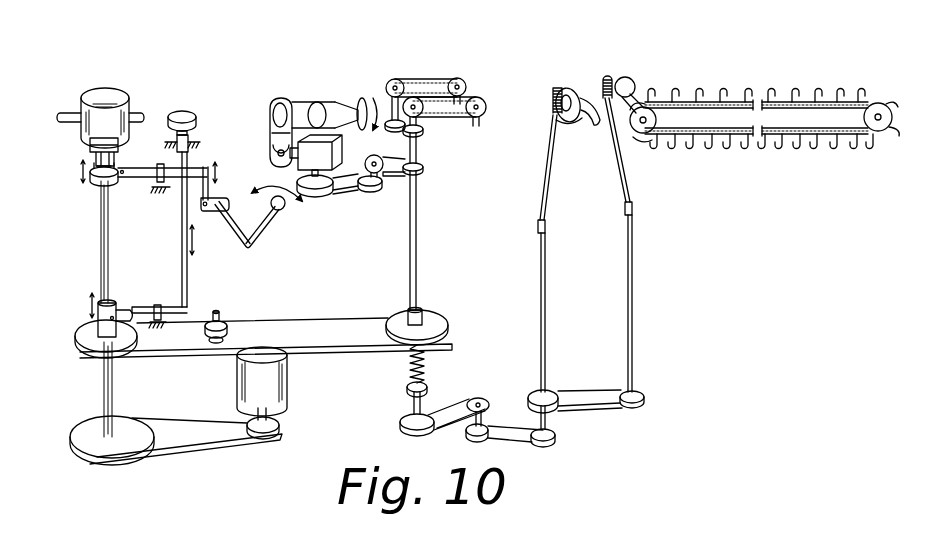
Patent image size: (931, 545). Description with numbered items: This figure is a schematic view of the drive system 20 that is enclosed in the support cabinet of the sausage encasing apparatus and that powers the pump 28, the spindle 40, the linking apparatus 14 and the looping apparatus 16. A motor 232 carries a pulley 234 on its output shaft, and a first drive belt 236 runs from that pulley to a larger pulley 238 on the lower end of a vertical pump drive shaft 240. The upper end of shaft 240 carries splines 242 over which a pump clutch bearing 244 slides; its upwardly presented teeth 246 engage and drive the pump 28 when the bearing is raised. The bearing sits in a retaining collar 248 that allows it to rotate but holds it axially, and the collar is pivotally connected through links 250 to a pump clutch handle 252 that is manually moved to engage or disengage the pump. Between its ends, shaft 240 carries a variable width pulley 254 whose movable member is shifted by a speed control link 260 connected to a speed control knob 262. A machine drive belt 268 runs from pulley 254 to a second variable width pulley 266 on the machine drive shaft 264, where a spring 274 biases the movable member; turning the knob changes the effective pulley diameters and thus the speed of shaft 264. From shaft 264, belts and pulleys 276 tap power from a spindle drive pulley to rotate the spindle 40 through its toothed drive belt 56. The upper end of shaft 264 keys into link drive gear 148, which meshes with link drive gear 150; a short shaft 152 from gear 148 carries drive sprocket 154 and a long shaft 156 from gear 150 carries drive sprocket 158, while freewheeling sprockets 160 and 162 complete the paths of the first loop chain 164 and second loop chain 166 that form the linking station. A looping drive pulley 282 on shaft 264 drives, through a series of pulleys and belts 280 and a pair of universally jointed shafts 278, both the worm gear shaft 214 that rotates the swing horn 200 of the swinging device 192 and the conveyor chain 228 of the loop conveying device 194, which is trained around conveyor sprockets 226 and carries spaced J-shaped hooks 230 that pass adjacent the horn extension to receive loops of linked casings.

The linking apparatus 14 is at (422, 76).
The looping apparatus 16 is at (764, 111).
The drive system 20 is at (352, 44).
The pump 28 is at (96, 90).
The spindle 40 is at (297, 90).
The drive belt 56 is at (270, 143).
The link drive gear 148 is at (425, 133).
The link drive gear 150 is at (391, 132).
The short shaft 152 is at (422, 118).
The sprocket or drive wheel 154 is at (418, 100).
The long shaft 156 is at (393, 118).
The sprocket or drive wheel 158 is at (397, 79).
The freewheeling sprocket 160 is at (486, 111).
The free-wheeling sprocket 162 is at (467, 86).
The first loop chain 164 is at (466, 100).
The second loop chain 166 is at (446, 80).
The swinging device 192 is at (568, 130).
The loop conveying device 194 is at (758, 96).
The swing horn 200 is at (576, 88).
The worm gear shaft 214 is at (547, 204).
The conveyor sprockets 226 is at (652, 128).
The conveyor chain 228 is at (692, 100).
The J-shaped hooks 230 is at (800, 142).
The motor 232 is at (287, 388).
The pulley 234 is at (280, 432).
The first drive belt 236 is at (190, 450).
The pulley 238 is at (92, 444).
The pump drive shaft 240 is at (104, 388).
The splines 242 is at (101, 228).
The pump clutch bearing 244 is at (95, 184).
The teeth 246 is at (90, 166).
The retaining collar 248 is at (113, 182).
The links 250 is at (206, 164).
The pump clutch handle 252 is at (270, 224).
The variable width pulley 254 is at (85, 330).
The speed control link 260 is at (187, 276).
The speed control knob 262 is at (187, 112).
The machine drive shaft 264 is at (420, 262).
The variable width pulley 266 is at (443, 318).
The machine drive belt 268 is at (348, 316).
The spring 274 is at (426, 360).
The belts and pulleys / spindle drive pulley 276 is at (428, 170).
The universally jointed shafts 278 is at (546, 304).
The pulleys and belts 280 is at (526, 444).
The looping drive pulley 282 is at (416, 432).